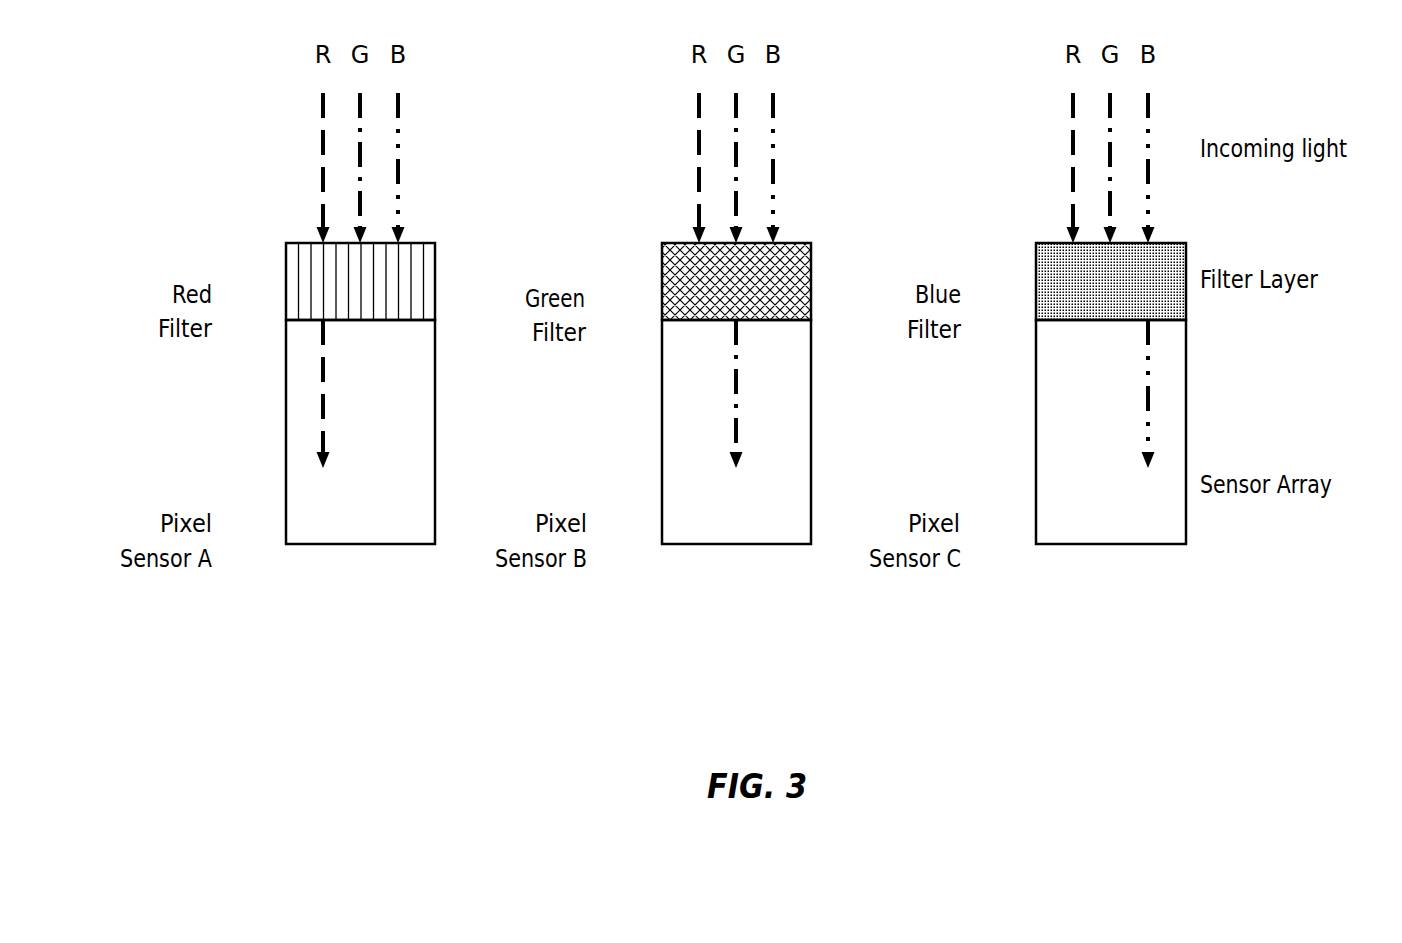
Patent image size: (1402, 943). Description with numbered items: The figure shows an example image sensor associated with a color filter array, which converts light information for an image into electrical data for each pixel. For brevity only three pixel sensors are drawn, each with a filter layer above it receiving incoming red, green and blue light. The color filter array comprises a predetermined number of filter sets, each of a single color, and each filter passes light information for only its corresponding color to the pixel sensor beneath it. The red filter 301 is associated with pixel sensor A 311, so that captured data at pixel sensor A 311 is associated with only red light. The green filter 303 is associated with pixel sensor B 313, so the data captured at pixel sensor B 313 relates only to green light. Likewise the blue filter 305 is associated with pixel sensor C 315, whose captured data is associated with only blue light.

The red filter 301 is at (286, 280).
The green filter 303 is at (662, 285).
The blue filter 305 is at (1036, 280).
The pixel sensor A 311 is at (286, 480).
The pixel sensor B 313 is at (662, 481).
The pixel sensor C 315 is at (1036, 481).